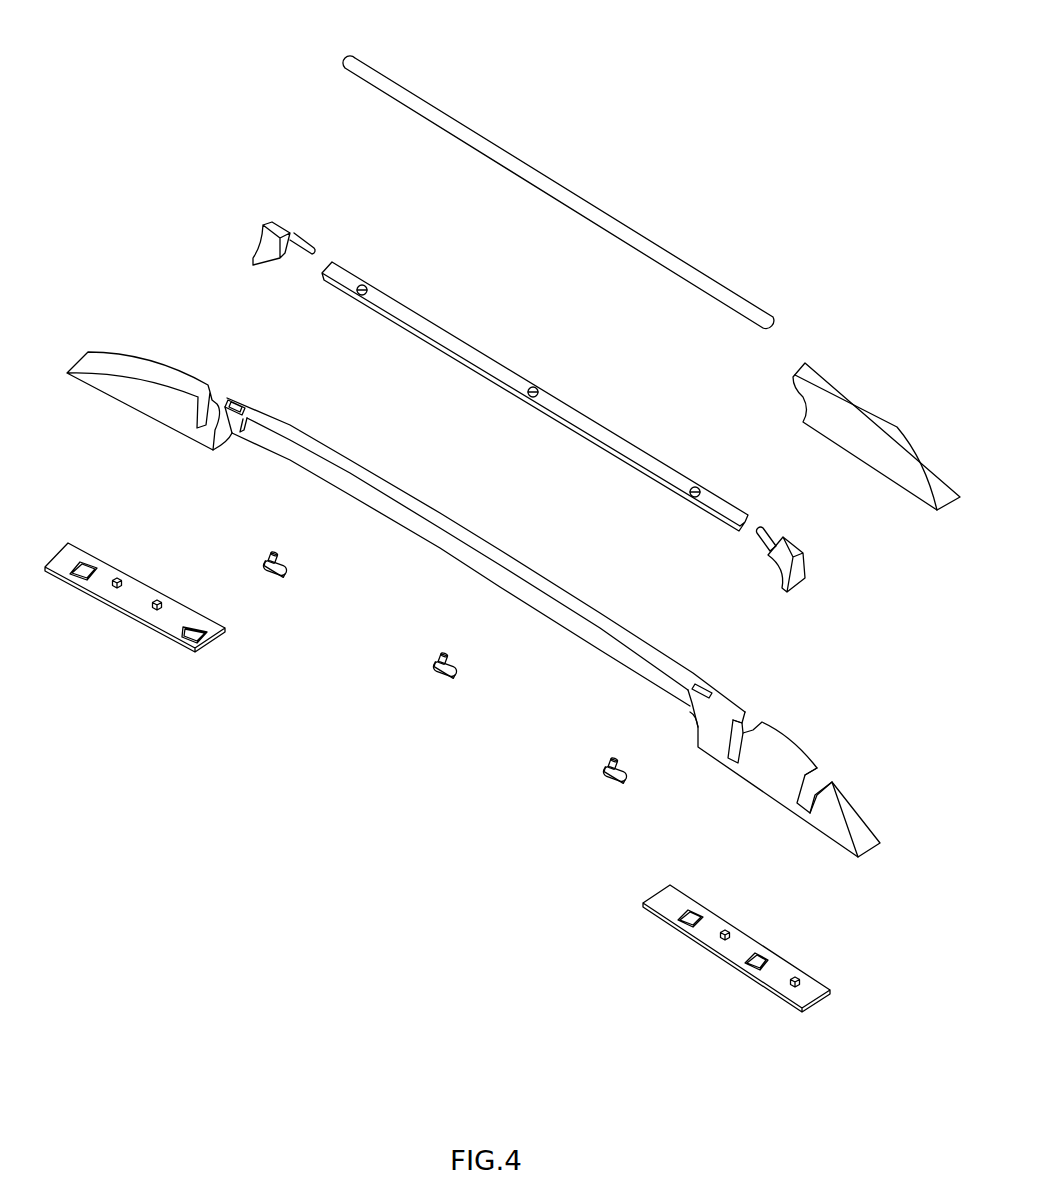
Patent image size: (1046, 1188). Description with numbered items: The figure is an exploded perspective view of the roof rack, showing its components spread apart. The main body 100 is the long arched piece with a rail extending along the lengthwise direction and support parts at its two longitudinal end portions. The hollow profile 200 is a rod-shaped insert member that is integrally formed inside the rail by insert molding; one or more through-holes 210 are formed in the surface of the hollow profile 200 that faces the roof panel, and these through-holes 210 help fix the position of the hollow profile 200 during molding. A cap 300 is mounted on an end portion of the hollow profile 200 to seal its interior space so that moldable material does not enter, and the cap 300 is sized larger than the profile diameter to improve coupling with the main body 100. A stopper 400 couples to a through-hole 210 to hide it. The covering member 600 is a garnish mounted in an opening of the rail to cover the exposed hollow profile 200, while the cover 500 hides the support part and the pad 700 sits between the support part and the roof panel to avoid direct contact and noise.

The main body 100 is at (232, 397).
The hollow profile 200 is at (535, 417).
The through-hole 210 is at (690, 500).
The cap 300 is at (800, 570).
The stopper 400 is at (438, 672).
The cover 500 is at (833, 392).
The covering member 600 is at (540, 177).
The pad 700 is at (708, 935).